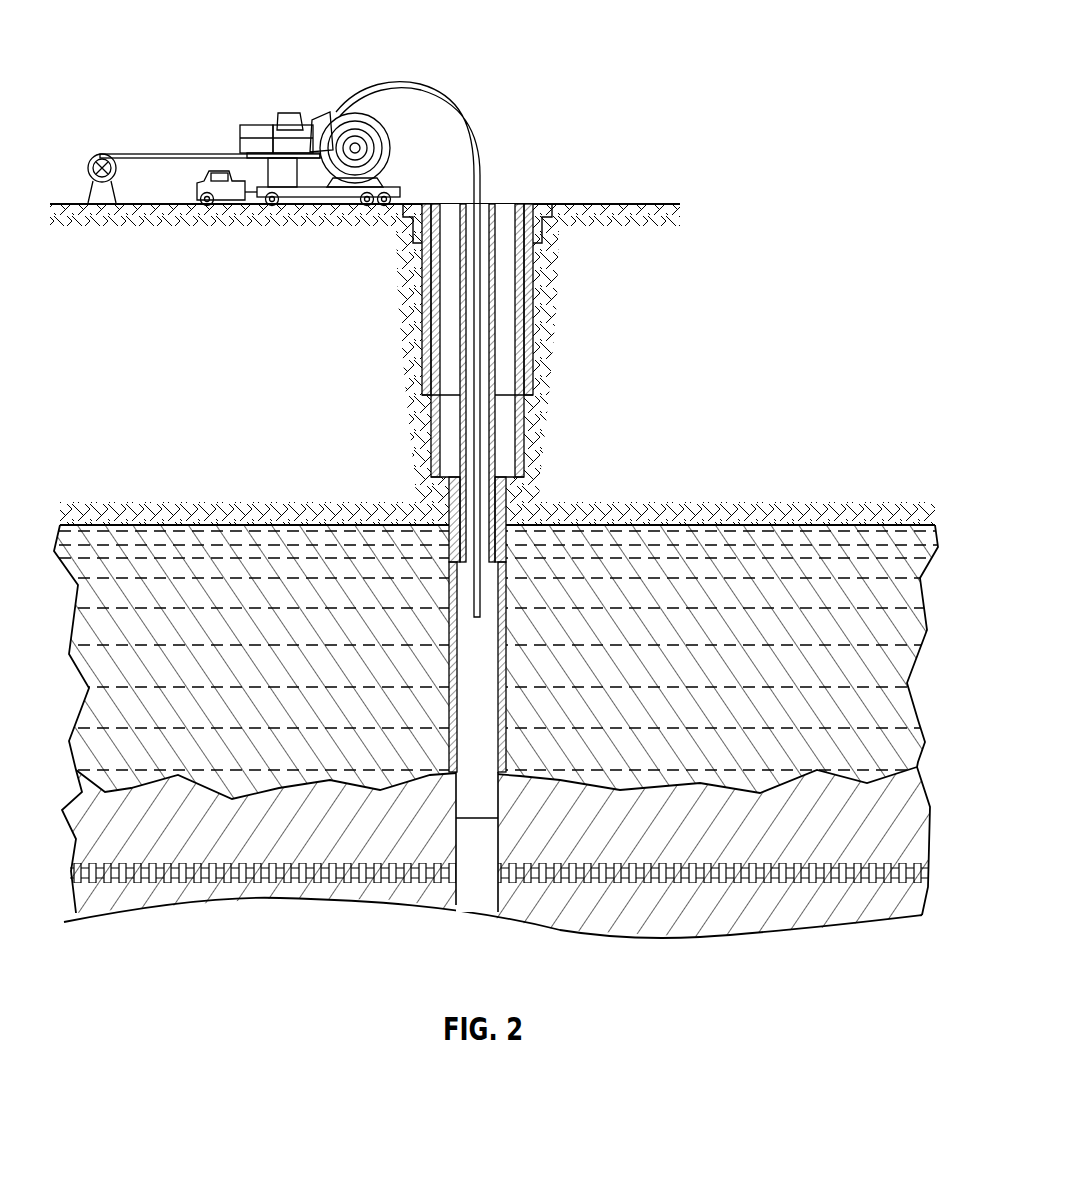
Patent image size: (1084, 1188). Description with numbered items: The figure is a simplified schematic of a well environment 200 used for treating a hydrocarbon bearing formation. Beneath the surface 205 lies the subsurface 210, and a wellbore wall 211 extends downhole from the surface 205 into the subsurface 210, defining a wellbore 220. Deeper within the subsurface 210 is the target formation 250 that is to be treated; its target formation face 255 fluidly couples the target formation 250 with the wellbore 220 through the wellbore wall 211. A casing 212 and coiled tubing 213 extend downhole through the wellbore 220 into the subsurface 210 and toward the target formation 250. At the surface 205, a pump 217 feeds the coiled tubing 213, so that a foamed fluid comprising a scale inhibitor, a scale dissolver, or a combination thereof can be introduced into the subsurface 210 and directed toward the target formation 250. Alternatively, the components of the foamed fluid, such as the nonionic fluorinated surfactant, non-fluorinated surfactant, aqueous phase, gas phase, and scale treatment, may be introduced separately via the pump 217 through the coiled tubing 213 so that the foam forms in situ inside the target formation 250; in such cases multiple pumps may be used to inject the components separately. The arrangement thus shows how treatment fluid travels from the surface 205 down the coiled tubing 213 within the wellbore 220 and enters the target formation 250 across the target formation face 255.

The well environment 200 is at (778, 94).
The surface 205 is at (652, 173).
The subsurface 210 is at (748, 605).
The wellbore wall 211 is at (523, 458).
The casing 212 is at (505, 300).
The coiled tubing 213 is at (352, 116).
The pump 217 is at (90, 167).
The wellbore 220 is at (477, 842).
The target formation 250 is at (932, 873).
The target formation face 255 is at (494, 873).